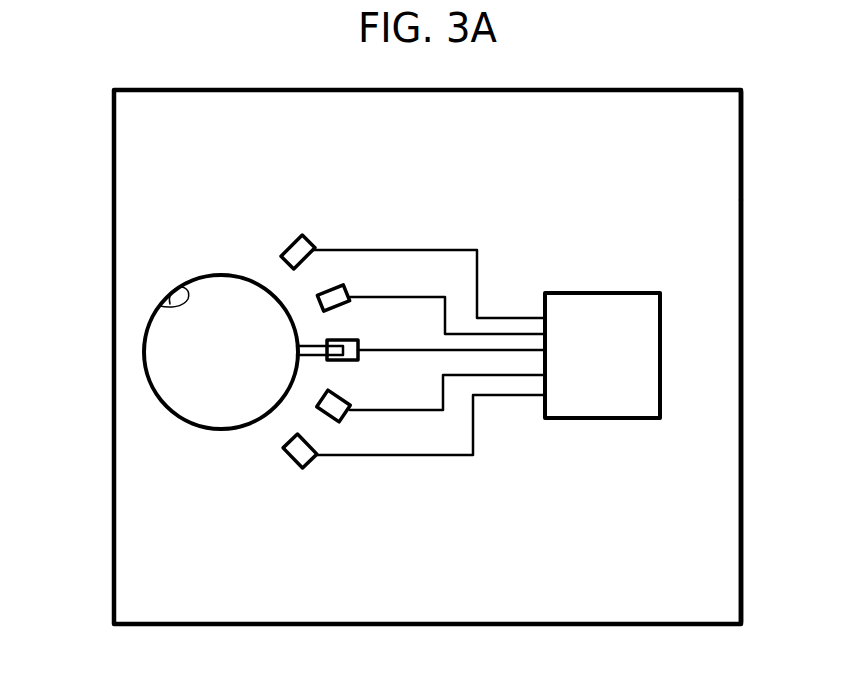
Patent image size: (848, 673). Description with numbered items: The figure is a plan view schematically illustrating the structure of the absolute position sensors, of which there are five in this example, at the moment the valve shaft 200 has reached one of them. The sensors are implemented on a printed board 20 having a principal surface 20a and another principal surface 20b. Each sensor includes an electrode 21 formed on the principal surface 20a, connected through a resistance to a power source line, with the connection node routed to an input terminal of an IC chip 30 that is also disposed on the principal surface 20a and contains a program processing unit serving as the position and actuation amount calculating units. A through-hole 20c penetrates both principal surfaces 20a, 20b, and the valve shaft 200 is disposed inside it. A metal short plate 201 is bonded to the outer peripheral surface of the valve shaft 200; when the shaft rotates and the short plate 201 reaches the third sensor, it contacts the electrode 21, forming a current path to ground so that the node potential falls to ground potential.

The printed board 20 is at (742, 88).
The principal surface 20a is at (720, 162).
The other principal surface 20b is at (728, 195).
The through-hole 20c is at (160, 306).
The valve shaft 200 is at (163, 363).
The short plate 201 is at (297, 352).
The electrode 21 is at (307, 237).
The IC chip 30 is at (662, 293).